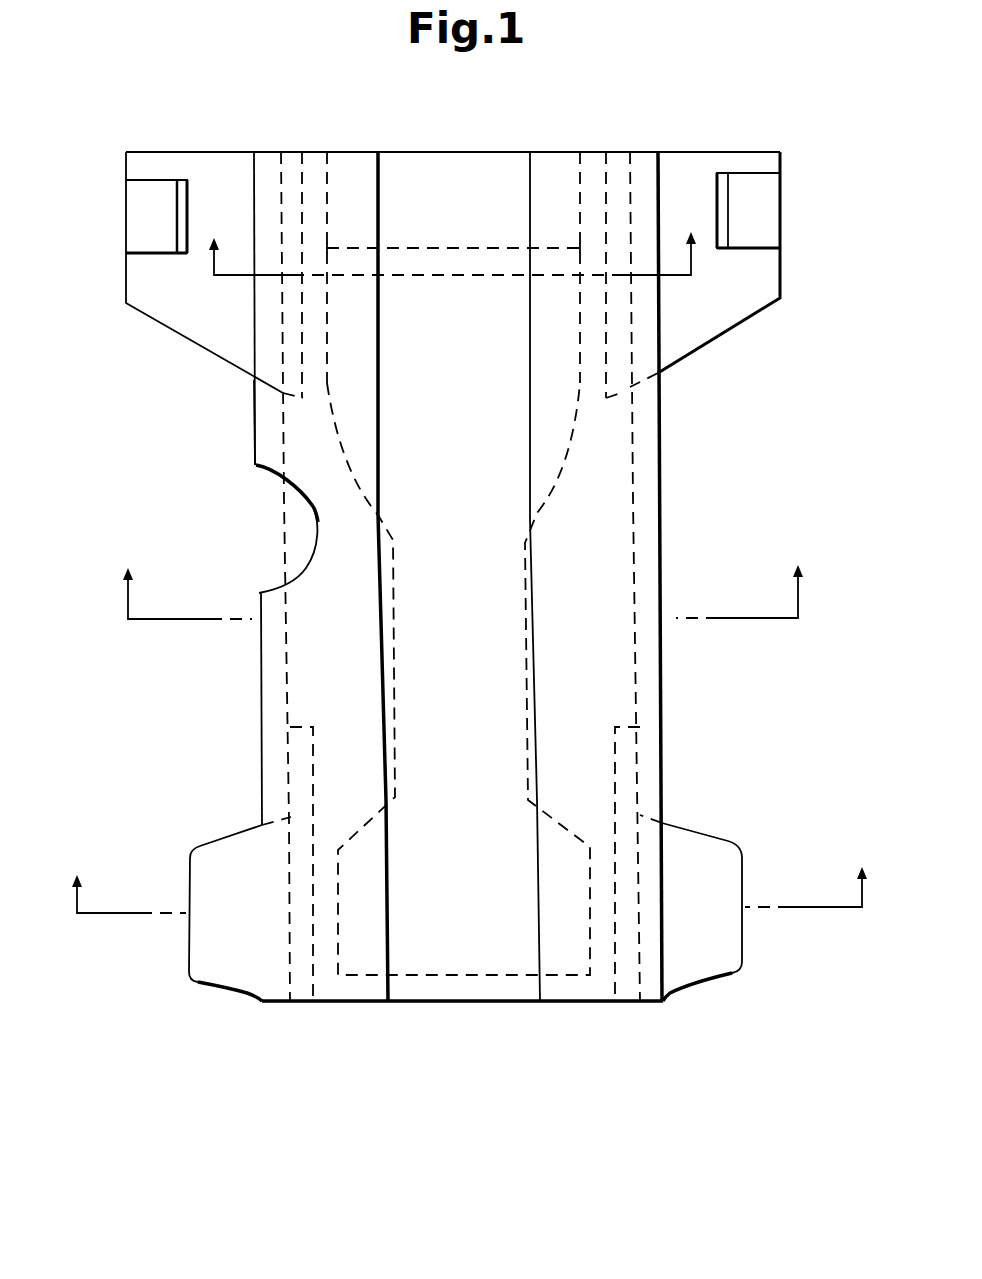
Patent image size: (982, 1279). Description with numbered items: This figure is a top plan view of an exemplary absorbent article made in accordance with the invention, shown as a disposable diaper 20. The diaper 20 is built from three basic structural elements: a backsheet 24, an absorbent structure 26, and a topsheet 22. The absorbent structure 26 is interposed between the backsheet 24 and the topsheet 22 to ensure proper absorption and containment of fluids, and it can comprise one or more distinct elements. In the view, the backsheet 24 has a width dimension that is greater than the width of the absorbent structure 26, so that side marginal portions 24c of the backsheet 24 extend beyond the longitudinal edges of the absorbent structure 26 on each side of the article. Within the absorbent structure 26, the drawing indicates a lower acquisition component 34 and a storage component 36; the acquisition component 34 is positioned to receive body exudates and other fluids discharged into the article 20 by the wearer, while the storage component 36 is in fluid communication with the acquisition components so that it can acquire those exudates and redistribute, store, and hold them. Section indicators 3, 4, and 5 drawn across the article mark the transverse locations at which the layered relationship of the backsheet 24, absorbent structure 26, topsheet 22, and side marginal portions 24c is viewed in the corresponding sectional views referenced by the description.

The disposable diaper 20 is at (428, 1040).
The topsheet 22 is at (273, 450).
The backsheet 24 is at (297, 525).
The side marginal portions 24c is at (328, 647).
The absorbent structure 26 is at (555, 430).
The lower acquisition component 34 is at (430, 257).
The storage component 36 is at (467, 300).
The section line 3- 3 is at (453, 240).
The section line 4- 4 is at (462, 573).
The section line 5- 5 is at (469, 873).